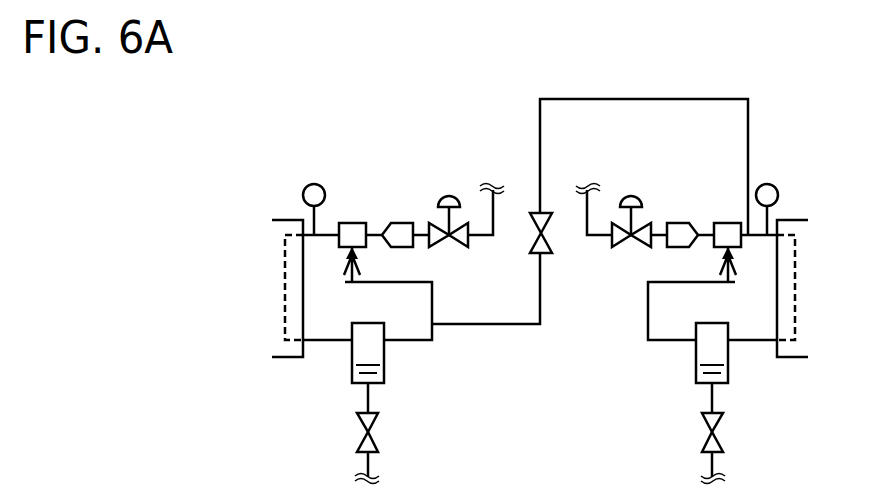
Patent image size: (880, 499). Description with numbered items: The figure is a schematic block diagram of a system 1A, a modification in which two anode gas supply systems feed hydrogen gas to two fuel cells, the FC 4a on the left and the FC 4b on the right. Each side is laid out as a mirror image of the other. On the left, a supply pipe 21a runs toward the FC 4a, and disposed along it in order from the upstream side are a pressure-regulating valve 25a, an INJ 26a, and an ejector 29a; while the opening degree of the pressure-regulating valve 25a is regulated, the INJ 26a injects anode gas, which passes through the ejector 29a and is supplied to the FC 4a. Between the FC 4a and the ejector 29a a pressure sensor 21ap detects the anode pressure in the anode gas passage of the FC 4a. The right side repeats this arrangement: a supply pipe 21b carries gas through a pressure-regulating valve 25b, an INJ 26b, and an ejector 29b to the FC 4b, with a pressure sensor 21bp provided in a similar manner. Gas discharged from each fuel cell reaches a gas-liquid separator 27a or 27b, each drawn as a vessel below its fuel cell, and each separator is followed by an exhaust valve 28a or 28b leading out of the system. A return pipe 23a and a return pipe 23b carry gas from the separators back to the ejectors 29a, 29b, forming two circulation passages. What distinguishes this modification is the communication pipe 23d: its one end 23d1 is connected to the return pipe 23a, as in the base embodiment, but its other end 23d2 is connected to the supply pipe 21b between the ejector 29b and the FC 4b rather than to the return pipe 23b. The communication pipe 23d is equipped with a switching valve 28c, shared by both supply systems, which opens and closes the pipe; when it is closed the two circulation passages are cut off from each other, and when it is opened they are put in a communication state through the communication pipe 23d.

The system 1A is at (702, 90).
The FC 4a is at (277, 220).
The FC 4b is at (803, 220).
The supply pipe 21a is at (477, 237).
The supply pipe 21b is at (603, 237).
The pressure sensor 21ap is at (310, 184).
The pressure sensor 21bp is at (770, 184).
The return pipe 23a is at (410, 341).
The return pipe 23b is at (676, 341).
The communication pipe 23d is at (540, 325).
The one end 23d1 is at (433, 326).
The other end 23d2 is at (750, 237).
The pressure-regulating valve 25a is at (446, 192).
The pressure-regulating valve 25b is at (637, 192).
The INJ 26a is at (397, 223).
The INJ 26b is at (687, 223).
The gas-liquid separator 27a is at (351, 353).
The gas-liquid separator 27b is at (729, 353).
The exhaust valve 28a is at (378, 440).
The exhaust valve 28b is at (702, 440).
The switching valve 28c is at (533, 213).
The ejector 29a is at (355, 223).
The ejector 29b is at (733, 223).